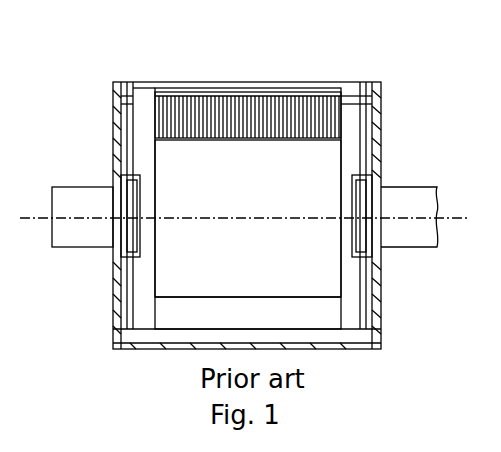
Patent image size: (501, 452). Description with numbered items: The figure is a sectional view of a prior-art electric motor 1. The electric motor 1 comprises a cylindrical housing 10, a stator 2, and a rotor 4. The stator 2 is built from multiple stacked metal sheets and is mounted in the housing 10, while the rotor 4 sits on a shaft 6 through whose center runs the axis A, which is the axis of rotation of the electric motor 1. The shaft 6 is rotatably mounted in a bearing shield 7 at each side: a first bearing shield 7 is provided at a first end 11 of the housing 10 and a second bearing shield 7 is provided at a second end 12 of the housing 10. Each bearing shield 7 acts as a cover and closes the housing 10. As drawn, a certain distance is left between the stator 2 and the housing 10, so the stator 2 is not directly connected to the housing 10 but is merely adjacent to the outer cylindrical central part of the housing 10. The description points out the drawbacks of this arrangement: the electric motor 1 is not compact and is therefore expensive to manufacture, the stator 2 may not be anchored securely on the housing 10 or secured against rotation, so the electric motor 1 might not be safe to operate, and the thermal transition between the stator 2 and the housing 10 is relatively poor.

The electric motor 1 is at (300, 72).
The stator 2 is at (233, 110).
The rotor 4 is at (250, 229).
The shaft 6 is at (405, 187).
The bearing shield 7 is at (113, 128).
The cylindrical housing 10 is at (182, 88).
The first end 11 is at (128, 82).
The second end 12 is at (357, 82).
The axis A is at (452, 220).